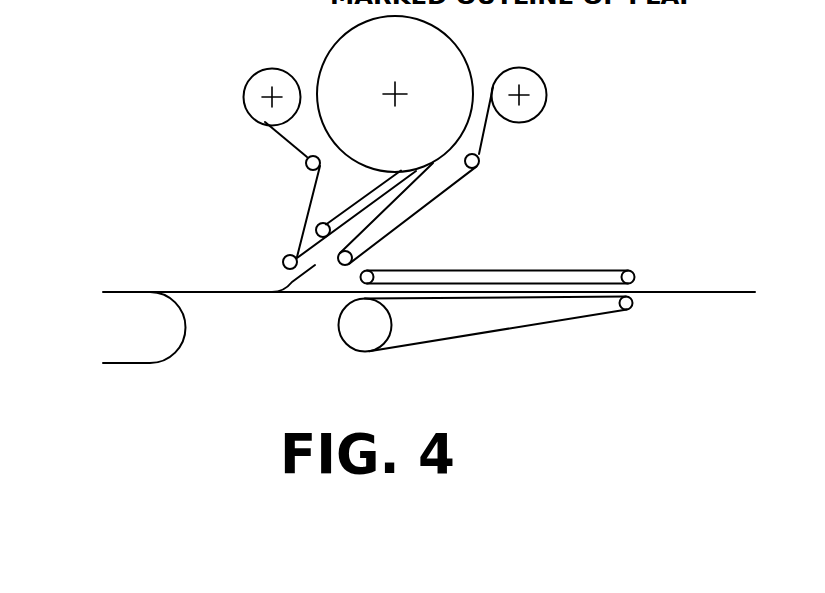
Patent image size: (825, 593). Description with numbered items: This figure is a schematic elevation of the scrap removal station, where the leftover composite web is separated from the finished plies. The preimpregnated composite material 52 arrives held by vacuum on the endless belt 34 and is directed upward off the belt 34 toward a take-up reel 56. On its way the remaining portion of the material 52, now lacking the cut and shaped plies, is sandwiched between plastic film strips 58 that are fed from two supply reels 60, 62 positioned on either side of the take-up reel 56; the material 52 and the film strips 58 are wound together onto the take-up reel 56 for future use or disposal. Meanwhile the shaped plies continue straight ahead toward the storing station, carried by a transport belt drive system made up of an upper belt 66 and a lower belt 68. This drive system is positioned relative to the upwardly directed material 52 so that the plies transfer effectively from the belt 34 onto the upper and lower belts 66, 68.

The endless belt 34 is at (142, 292).
The preimpregnated composite material 52 is at (311, 268).
The take-up reel 56 is at (439, 60).
The plastic film strips 58 is at (295, 224).
The supply reel 60 is at (538, 99).
The supply reel 62 is at (277, 69).
The upper belt 66 is at (548, 270).
The lower belt 68 is at (532, 325).